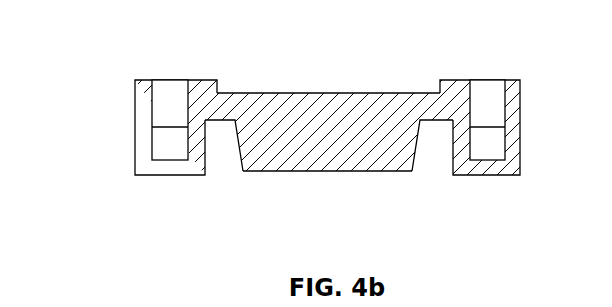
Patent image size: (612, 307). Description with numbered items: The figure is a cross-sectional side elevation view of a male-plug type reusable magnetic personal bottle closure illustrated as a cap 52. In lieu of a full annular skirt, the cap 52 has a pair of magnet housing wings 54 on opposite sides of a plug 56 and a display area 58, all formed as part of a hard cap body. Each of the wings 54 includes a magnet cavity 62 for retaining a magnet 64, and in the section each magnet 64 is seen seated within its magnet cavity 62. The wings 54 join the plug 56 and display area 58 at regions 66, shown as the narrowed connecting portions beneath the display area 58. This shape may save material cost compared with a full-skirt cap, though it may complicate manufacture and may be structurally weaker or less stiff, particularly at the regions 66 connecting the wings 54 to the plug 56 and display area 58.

The cap 52 is at (74, 84).
The magnet housing wings 54 is at (135, 128).
The plug 56 is at (416, 143).
The display area 58 is at (302, 92).
The magnet cavities 62 is at (175, 68).
The magnets 64 is at (478, 127).
The regions 66 is at (222, 120).